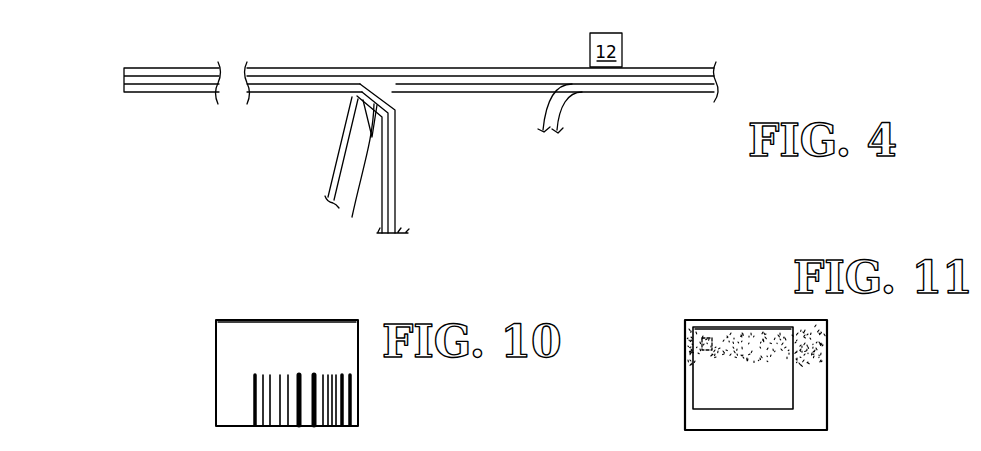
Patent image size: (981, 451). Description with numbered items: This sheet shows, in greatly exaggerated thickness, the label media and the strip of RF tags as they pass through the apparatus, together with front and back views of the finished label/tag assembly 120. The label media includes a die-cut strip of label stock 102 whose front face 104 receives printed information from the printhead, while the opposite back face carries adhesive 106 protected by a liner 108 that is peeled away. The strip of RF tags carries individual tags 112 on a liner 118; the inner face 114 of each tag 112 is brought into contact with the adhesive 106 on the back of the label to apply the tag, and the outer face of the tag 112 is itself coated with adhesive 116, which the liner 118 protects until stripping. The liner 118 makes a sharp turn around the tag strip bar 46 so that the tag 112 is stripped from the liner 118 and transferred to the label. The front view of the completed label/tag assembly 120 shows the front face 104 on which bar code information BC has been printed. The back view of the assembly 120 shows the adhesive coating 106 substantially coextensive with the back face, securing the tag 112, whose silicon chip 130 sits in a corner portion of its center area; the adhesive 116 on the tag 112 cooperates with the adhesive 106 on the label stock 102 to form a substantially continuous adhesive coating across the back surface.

In FIG. 4, the tag strip bar 46 is at (359, 173).
In FIG. 4, the label stock 102 is at (692, 74).
In FIG. 4, the front face 104 is at (670, 67).
In FIG. 10, the front face 104 is at (232, 338).
In FIG. 4, the adhesive 106 is at (717, 77).
In FIG. 11, the adhesive 106 is at (817, 347).
In FIG. 4, the liner 108 is at (668, 92).
In FIG. 4, the tag 112 is at (397, 185).
In FIG. 11, the tag 112 is at (803, 392).
In FIG. 4, the inner face 114 is at (397, 204).
In FIG. 4, the adhesive 116 is at (390, 236).
In FIG. 11, the adhesive 116 is at (708, 365).
In FIG. 4, the liner 118 is at (340, 158).
In FIG. 4, the label/tag assembly 120 is at (123, 60).
In FIG. 10, the label/tag assembly 120 is at (198, 368).
In FIG. 11, the label/tag assembly 120 is at (662, 342).
In FIG. 11, the silicon chip 130 is at (710, 336).
In FIG. 10, the bar code information BC is at (350, 402).